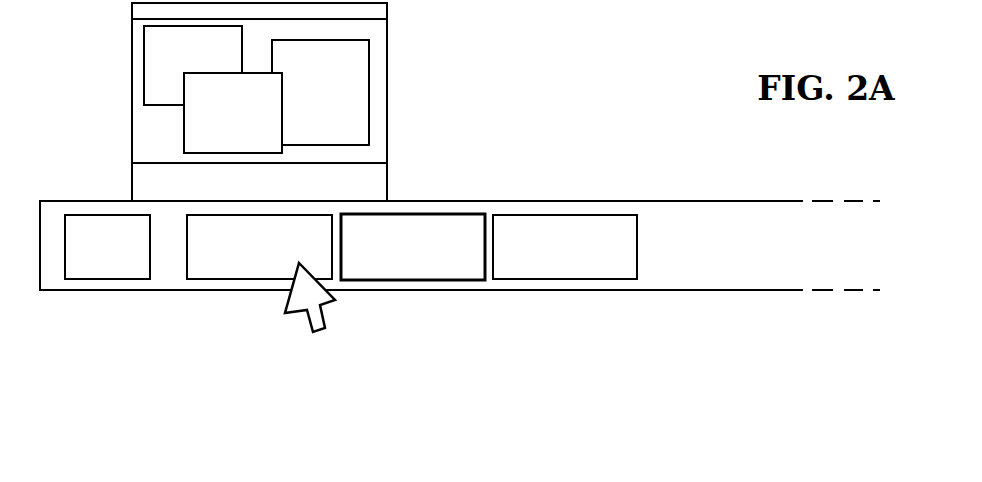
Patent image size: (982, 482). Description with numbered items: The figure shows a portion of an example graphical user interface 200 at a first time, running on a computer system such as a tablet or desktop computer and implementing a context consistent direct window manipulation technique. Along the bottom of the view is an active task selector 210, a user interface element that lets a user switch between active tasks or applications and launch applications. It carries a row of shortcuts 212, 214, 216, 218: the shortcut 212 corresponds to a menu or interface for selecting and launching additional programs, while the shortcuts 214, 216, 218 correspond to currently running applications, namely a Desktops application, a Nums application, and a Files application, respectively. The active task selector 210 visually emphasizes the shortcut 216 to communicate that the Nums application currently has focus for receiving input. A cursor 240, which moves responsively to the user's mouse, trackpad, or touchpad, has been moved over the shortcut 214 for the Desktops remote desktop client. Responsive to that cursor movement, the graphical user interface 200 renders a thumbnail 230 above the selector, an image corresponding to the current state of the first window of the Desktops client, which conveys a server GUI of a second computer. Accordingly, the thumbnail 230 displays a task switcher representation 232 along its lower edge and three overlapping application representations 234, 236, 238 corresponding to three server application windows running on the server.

The graphical user interface 200 is at (649, 54).
The active task selector 210 is at (700, 256).
The shortcut 212 is at (107, 279).
The shortcut 214 is at (259, 279).
The shortcut 216 is at (412, 280).
The shortcut 218 is at (565, 279).
The thumbnail 230 is at (99, 60).
The task switcher representation 232 is at (238, 194).
The application representation 234 is at (172, 62).
The application representation 236 is at (212, 122).
The application representation 238 is at (298, 101).
The cursor 240 is at (316, 333).